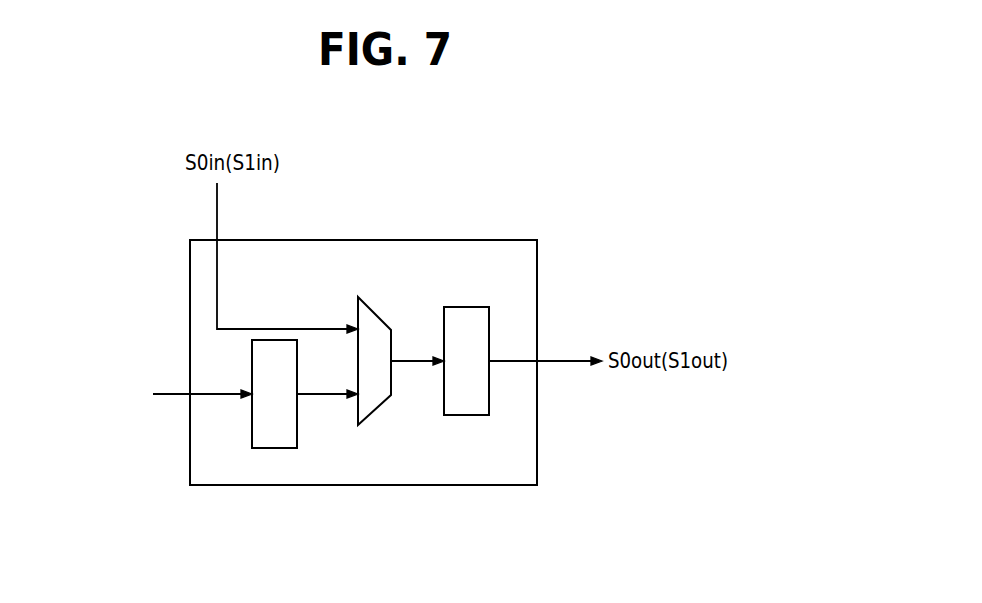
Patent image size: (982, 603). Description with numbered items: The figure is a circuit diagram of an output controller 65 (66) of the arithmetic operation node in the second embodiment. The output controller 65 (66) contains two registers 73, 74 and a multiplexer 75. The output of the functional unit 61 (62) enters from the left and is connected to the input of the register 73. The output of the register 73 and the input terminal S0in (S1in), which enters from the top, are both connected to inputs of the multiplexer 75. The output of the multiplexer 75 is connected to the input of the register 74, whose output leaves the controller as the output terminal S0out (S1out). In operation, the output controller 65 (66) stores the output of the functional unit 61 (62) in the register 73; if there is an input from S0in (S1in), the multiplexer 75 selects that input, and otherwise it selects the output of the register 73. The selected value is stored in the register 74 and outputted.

The functional unit 61 is at (157, 395).
The functional unit 62 is at (157, 395).
The output controller 65 is at (527, 240).
The output controller 66 is at (432, 331).
The register 73 is at (275, 448).
The register 74 is at (463, 415).
The multiplexer 75 is at (373, 415).